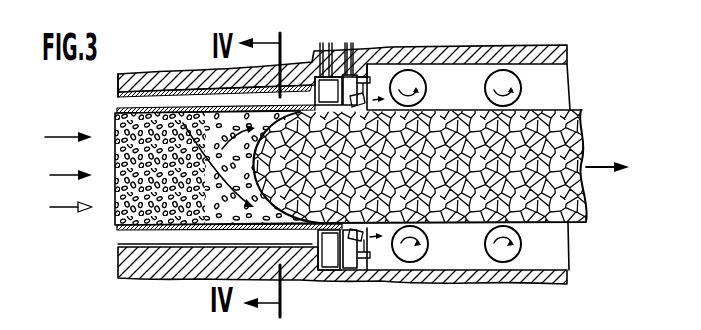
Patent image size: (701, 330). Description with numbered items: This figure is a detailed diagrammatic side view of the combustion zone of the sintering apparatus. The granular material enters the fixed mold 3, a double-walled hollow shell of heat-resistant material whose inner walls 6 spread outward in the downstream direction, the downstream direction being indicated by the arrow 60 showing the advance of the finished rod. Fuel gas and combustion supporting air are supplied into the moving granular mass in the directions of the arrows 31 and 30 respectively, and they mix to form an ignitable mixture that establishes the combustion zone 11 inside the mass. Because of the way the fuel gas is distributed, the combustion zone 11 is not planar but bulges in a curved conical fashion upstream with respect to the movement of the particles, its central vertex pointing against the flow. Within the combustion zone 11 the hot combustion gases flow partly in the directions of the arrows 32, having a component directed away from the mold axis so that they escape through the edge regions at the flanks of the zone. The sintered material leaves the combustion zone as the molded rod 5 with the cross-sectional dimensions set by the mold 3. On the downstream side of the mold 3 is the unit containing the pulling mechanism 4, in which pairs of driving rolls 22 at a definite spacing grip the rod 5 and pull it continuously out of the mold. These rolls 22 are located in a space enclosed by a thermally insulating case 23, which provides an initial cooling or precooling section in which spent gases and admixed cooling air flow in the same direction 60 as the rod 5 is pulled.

The mold 3 is at (116, 249).
The pulling mechanism unit 4 is at (554, 87).
The molded rod 5 is at (579, 137).
The inner walls 6 is at (116, 111).
The combustion zone 11 is at (200, 226).
The driving rolls 22 is at (408, 84).
The thermally insulating case 23 is at (558, 54).
The combustion supporting air direction arrow 30 is at (52, 137).
The fuel gas direction arrow 31 is at (50, 175).
The combustion gas flow arrows 32 is at (223, 150).
The direction of advance arrow 60 is at (607, 185).